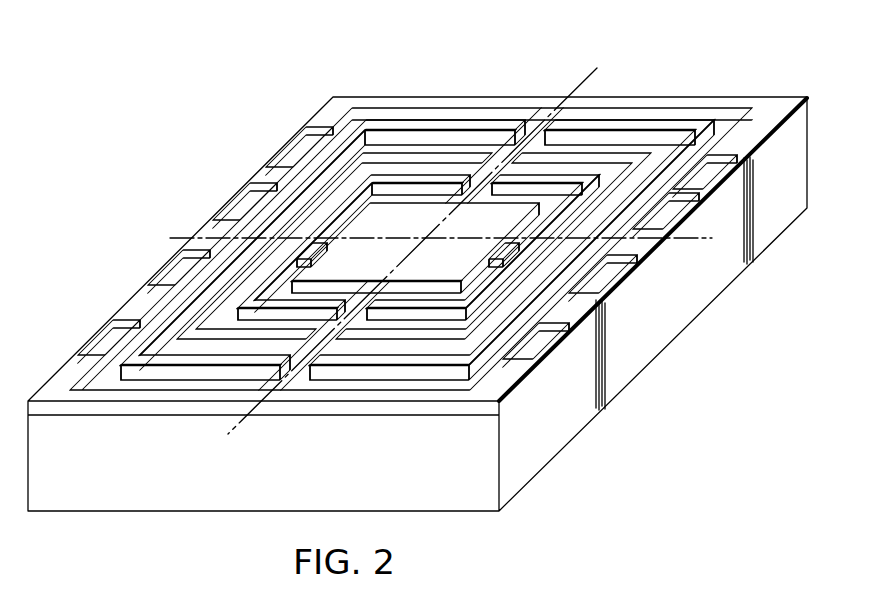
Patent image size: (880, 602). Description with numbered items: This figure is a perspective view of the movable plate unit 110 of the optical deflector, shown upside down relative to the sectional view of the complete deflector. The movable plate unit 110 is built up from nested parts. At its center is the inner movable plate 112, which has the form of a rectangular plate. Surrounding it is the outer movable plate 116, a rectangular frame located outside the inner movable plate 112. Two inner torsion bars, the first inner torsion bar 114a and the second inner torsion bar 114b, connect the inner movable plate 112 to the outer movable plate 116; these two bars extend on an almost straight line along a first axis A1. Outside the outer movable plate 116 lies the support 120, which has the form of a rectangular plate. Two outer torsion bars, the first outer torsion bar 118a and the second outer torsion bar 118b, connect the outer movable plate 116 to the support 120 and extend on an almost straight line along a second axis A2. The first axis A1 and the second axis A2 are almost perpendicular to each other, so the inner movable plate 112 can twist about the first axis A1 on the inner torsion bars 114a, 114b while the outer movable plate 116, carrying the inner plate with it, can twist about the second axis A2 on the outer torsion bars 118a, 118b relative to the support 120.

The movable plate unit 110 is at (417, 271).
The inner movable plate 112 is at (400, 227).
The first inner torsion bar 114a is at (342, 227).
The second inner torsion bar 114b is at (545, 197).
The outer movable plate 116 is at (227, 313).
The first outer torsion bar 118a is at (493, 152).
The second outer torsion bar 118b is at (340, 350).
The support 120 is at (771, 111).
The first axis A1 is at (183, 235).
The second axis A2 is at (577, 88).